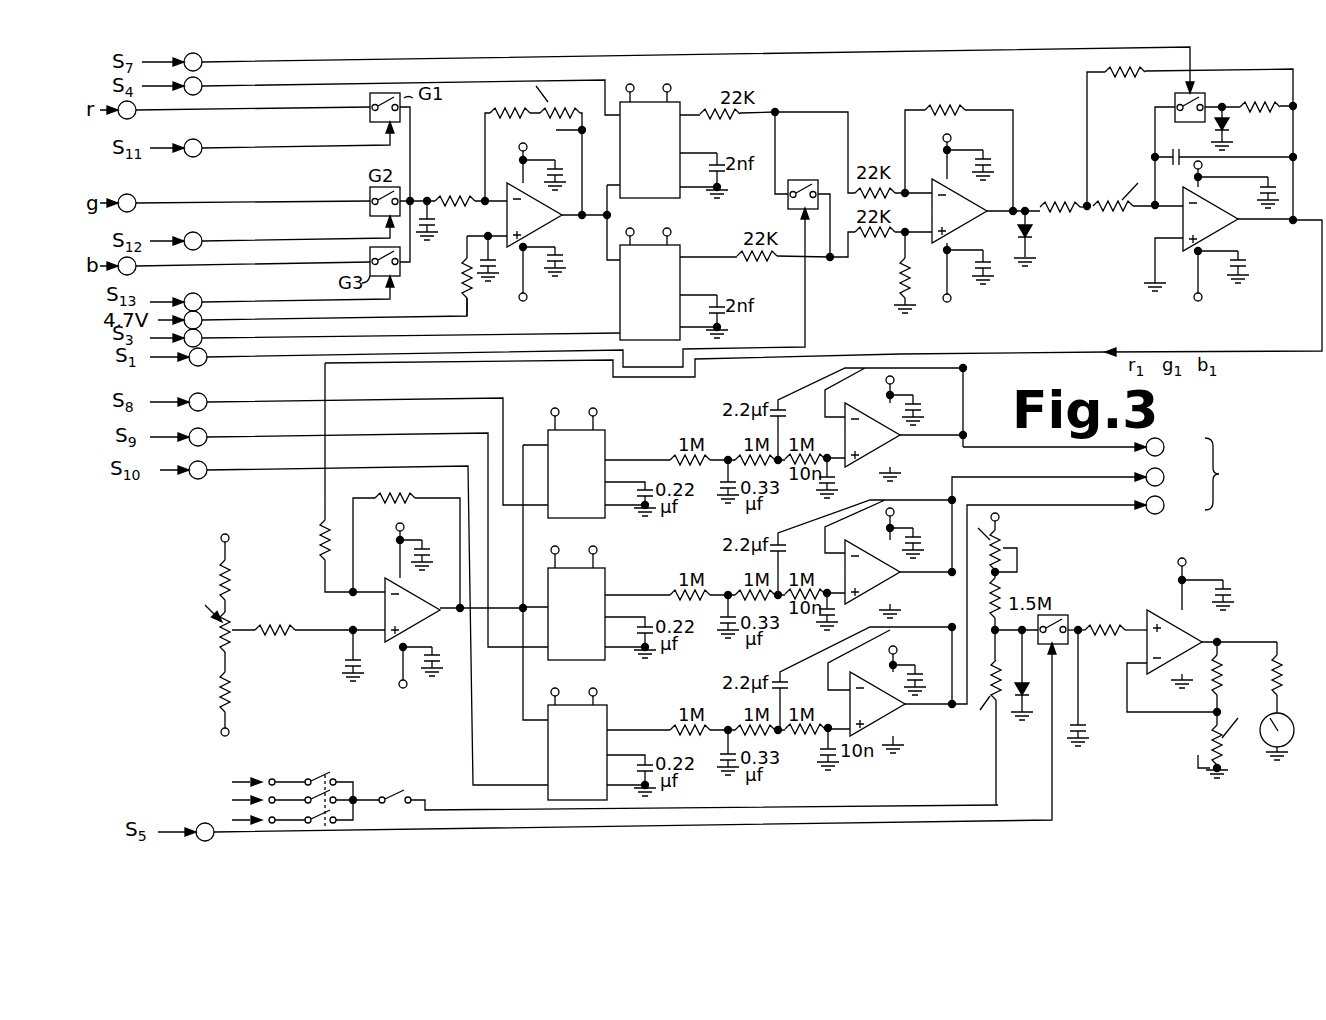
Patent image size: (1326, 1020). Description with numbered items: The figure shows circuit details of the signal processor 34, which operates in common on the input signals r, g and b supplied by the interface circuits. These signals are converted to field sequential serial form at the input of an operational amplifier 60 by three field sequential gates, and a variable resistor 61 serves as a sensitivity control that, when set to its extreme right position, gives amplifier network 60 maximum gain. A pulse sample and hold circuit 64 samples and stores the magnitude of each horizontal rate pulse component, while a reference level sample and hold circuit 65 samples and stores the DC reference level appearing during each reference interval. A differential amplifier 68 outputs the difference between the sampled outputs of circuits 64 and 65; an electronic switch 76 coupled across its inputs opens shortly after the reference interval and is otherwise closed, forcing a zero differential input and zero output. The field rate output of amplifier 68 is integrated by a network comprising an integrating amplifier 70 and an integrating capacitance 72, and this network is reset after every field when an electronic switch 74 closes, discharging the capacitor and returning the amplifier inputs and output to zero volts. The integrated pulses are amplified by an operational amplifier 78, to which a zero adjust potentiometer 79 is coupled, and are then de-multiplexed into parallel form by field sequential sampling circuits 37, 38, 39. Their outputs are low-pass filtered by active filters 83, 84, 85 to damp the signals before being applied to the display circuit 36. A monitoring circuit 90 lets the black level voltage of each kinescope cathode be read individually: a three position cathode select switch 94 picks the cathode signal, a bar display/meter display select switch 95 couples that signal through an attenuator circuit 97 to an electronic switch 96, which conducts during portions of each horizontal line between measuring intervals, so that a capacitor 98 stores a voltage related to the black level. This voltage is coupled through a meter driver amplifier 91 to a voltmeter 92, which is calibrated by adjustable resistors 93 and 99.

The signal processor 34 is at (1093, 332).
The display circuit 36 is at (1214, 478).
The field sequential sampling circuit 37 is at (644, 434).
The field sequential sampling circuit 38 is at (644, 571).
The field sequential sampling circuit 39 is at (644, 709).
The operational amplifier 60 is at (463, 109).
The variable resistor 61 is at (608, 158).
The pulse sample and hold circuit 64 is at (716, 96).
The reference level sample and hold circuit 65 is at (663, 365).
The differential amplifier 68 is at (953, 76).
The integrating amplifier 70 is at (1180, 215).
The integrating capacitance 72 is at (1154, 157).
The electronic switch 74 is at (1205, 96).
The electronic switch 76 is at (818, 171).
The operational amplifier 78 is at (288, 501).
The zero adjust potentiometer 79 is at (165, 628).
The active filter 83 is at (1001, 402).
The active filter 84 is at (950, 593).
The active filter 85 is at (945, 746).
The circuit 90 is at (1123, 788).
The meter driver amplifier 91 is at (1160, 609).
The voltmeter 92 is at (1290, 718).
The adjustable resistor 93 is at (1190, 764).
The cathode select switch 94 is at (328, 769).
The bar display/meter display select switch 95 is at (413, 776).
The electronic switch 96 is at (1072, 604).
The attenuator circuit 97 is at (991, 654).
The capacitor 98 is at (1078, 724).
The adjustable resistor 99 is at (991, 584).